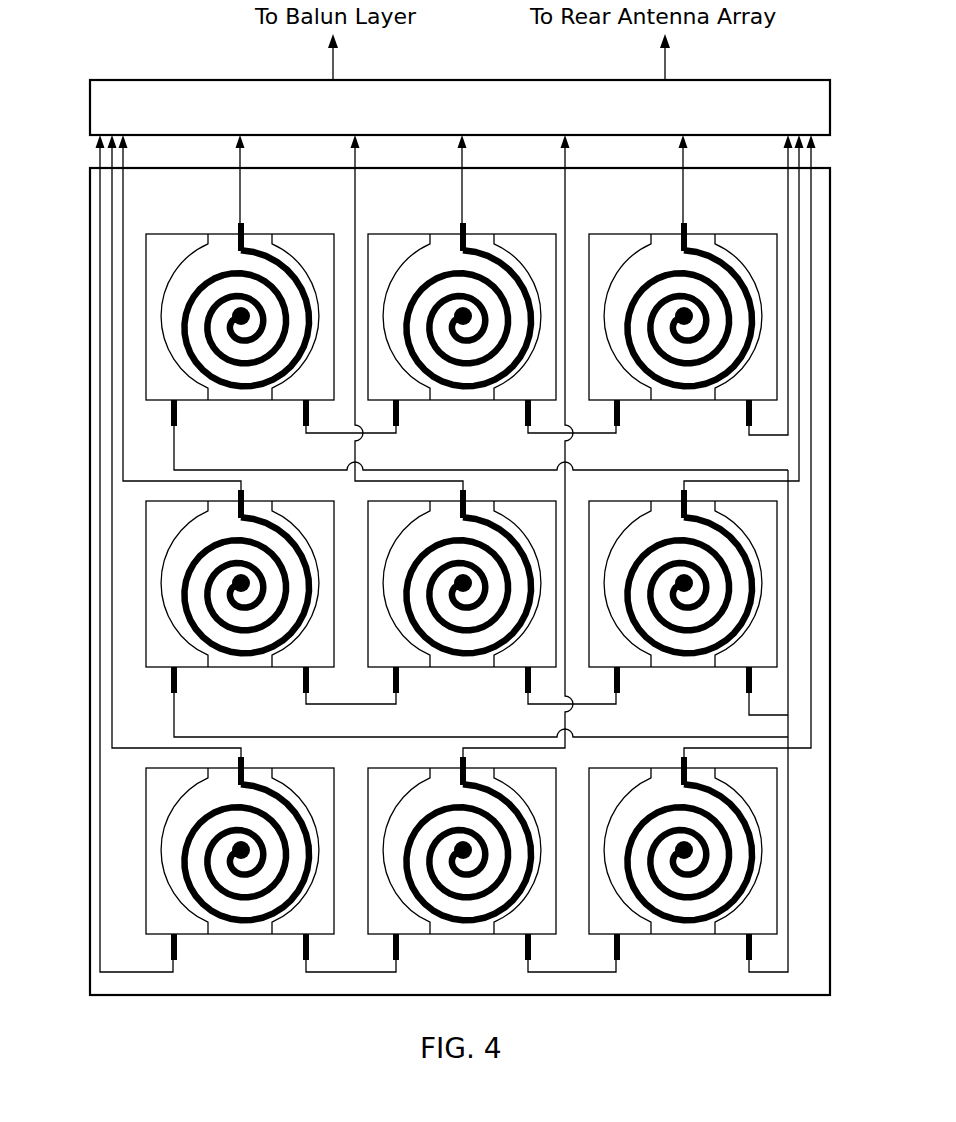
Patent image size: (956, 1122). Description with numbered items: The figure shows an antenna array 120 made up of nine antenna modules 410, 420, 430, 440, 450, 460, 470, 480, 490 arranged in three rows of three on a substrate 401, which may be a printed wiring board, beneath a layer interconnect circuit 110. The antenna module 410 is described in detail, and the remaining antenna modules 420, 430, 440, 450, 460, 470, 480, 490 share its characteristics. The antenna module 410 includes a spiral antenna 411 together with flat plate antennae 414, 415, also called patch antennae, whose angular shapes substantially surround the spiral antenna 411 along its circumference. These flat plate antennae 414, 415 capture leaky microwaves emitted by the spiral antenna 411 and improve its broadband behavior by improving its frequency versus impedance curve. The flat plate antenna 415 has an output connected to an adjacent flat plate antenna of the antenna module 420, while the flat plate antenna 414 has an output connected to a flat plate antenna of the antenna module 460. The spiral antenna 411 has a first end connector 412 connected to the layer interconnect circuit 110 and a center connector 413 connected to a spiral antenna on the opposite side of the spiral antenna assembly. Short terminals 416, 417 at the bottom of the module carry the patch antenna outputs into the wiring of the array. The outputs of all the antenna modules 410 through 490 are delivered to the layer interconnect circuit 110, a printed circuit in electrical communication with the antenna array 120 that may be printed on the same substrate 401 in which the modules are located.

The layer interconnect circuit 110 is at (460, 107).
The antenna array 120 is at (73, 165).
The substrate 401 is at (86, 491).
The antenna module 410 is at (189, 314).
The spiral antenna 411 is at (173, 317).
The first end connector 412 is at (267, 211).
The center connector 413 is at (143, 323).
The flat plate antenna 414 is at (237, 302).
The flat plate antenna 415 is at (251, 295).
The first port 416 is at (205, 428).
The second port 417 is at (281, 428).
The antenna module 420 is at (439, 216).
The antenna module 430 is at (667, 216).
The antenna module 440 is at (268, 498).
The antenna module 450 is at (480, 498).
The antenna module 460 is at (667, 501).
The antenna module 470 is at (268, 766).
The antenna module 480 is at (447, 766).
The antenna module 490 is at (668, 766).